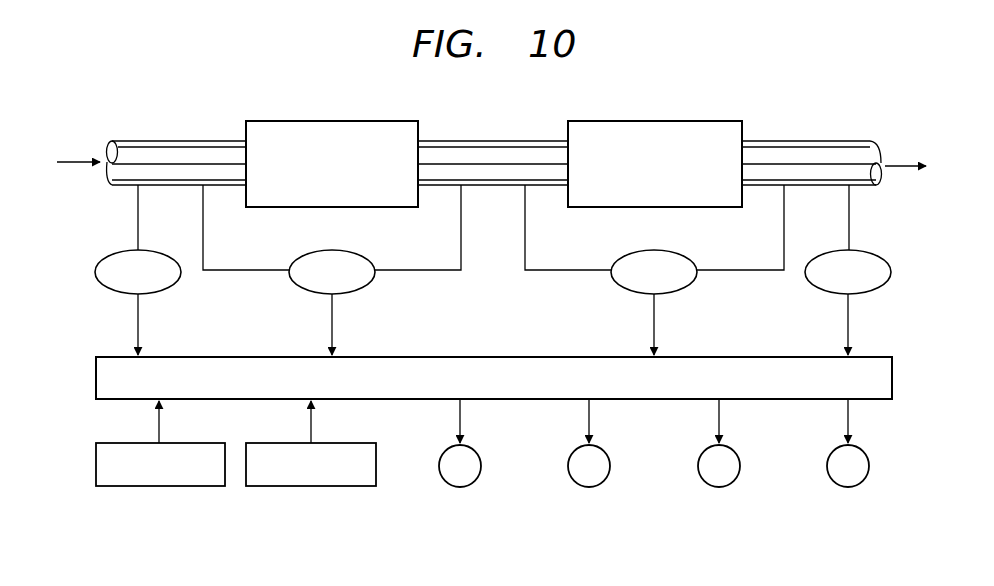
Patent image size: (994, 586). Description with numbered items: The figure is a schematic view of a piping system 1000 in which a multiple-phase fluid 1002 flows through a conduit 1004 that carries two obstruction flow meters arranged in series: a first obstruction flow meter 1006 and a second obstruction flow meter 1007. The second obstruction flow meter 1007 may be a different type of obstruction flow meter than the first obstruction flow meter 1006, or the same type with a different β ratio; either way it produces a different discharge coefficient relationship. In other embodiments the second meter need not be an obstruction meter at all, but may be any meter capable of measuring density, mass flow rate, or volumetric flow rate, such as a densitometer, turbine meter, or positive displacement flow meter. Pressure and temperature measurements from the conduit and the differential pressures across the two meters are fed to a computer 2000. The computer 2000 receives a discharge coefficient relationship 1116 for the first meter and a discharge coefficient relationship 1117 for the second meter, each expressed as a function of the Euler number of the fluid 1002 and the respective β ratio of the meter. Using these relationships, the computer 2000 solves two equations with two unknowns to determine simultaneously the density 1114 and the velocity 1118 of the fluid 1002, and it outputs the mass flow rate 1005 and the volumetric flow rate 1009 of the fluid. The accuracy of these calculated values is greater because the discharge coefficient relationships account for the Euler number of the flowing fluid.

The piping system 1000 is at (762, 76).
The multiple-phase fluid 1002 is at (82, 160).
The conduit 1004 is at (160, 140).
The first obstruction flow meter 1006 is at (330, 120).
The second obstruction flow meter 1007 is at (655, 120).
The computer 2000 is at (476, 355).
The discharge coefficient relationship 1116 is at (160, 488).
The discharge coefficient relationship 1117 is at (311, 488).
The mass flow rate 1005 is at (460, 488).
The density 1114 is at (590, 488).
The velocity 1118 is at (720, 488).
The volumetric flow rate 1009 is at (849, 488).